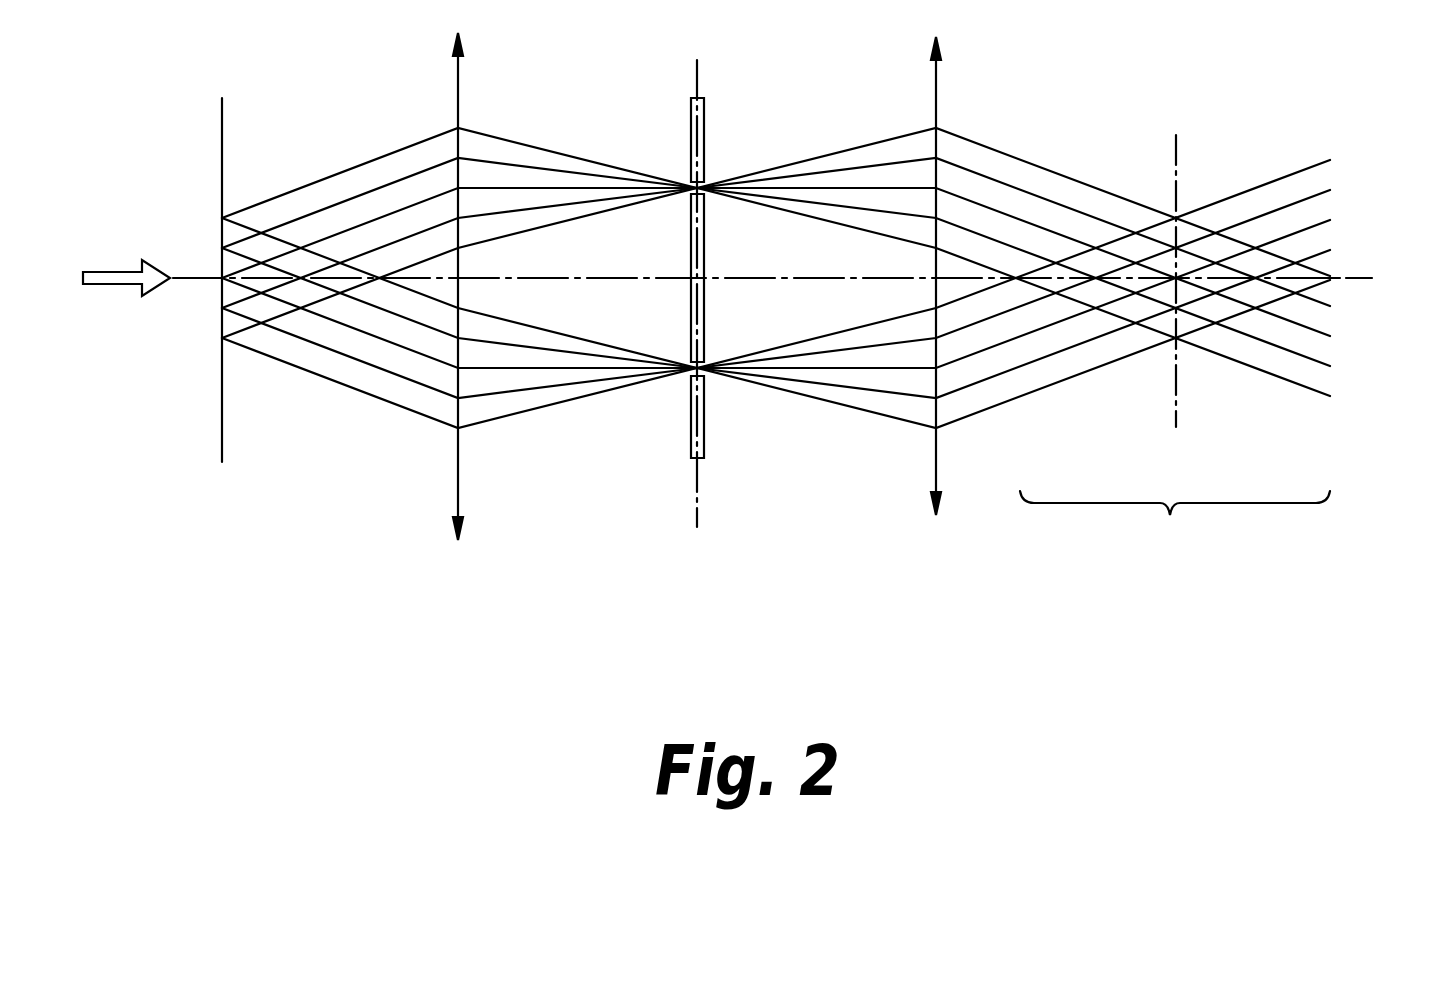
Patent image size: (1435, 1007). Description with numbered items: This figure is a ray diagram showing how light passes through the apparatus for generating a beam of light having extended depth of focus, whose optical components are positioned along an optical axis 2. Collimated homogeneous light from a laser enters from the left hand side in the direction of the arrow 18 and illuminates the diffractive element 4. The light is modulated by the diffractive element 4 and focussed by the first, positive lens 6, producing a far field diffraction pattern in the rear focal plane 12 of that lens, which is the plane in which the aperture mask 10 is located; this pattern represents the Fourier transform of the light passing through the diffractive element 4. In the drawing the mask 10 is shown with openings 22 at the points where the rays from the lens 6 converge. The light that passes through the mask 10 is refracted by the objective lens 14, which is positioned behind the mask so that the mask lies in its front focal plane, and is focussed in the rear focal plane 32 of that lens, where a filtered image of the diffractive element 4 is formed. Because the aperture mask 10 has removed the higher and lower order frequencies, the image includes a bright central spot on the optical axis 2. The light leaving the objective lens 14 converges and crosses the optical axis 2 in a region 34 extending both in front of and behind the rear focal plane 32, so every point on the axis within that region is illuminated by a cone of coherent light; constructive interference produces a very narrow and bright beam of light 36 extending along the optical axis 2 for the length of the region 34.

The optical axis 2 is at (722, 278).
The diffractive element 4 is at (222, 445).
The positive lens 6 is at (460, 477).
The aperture mask 10 is at (704, 129).
The rear focal plane 12 is at (697, 500).
The objective lens 14 is at (940, 478).
The arrow 18 is at (132, 284).
The aperture opening 22 is at (687, 193).
The rear focal plane 32 is at (1177, 398).
The region 34 is at (1175, 523).
The beam of light 36 is at (1318, 277).